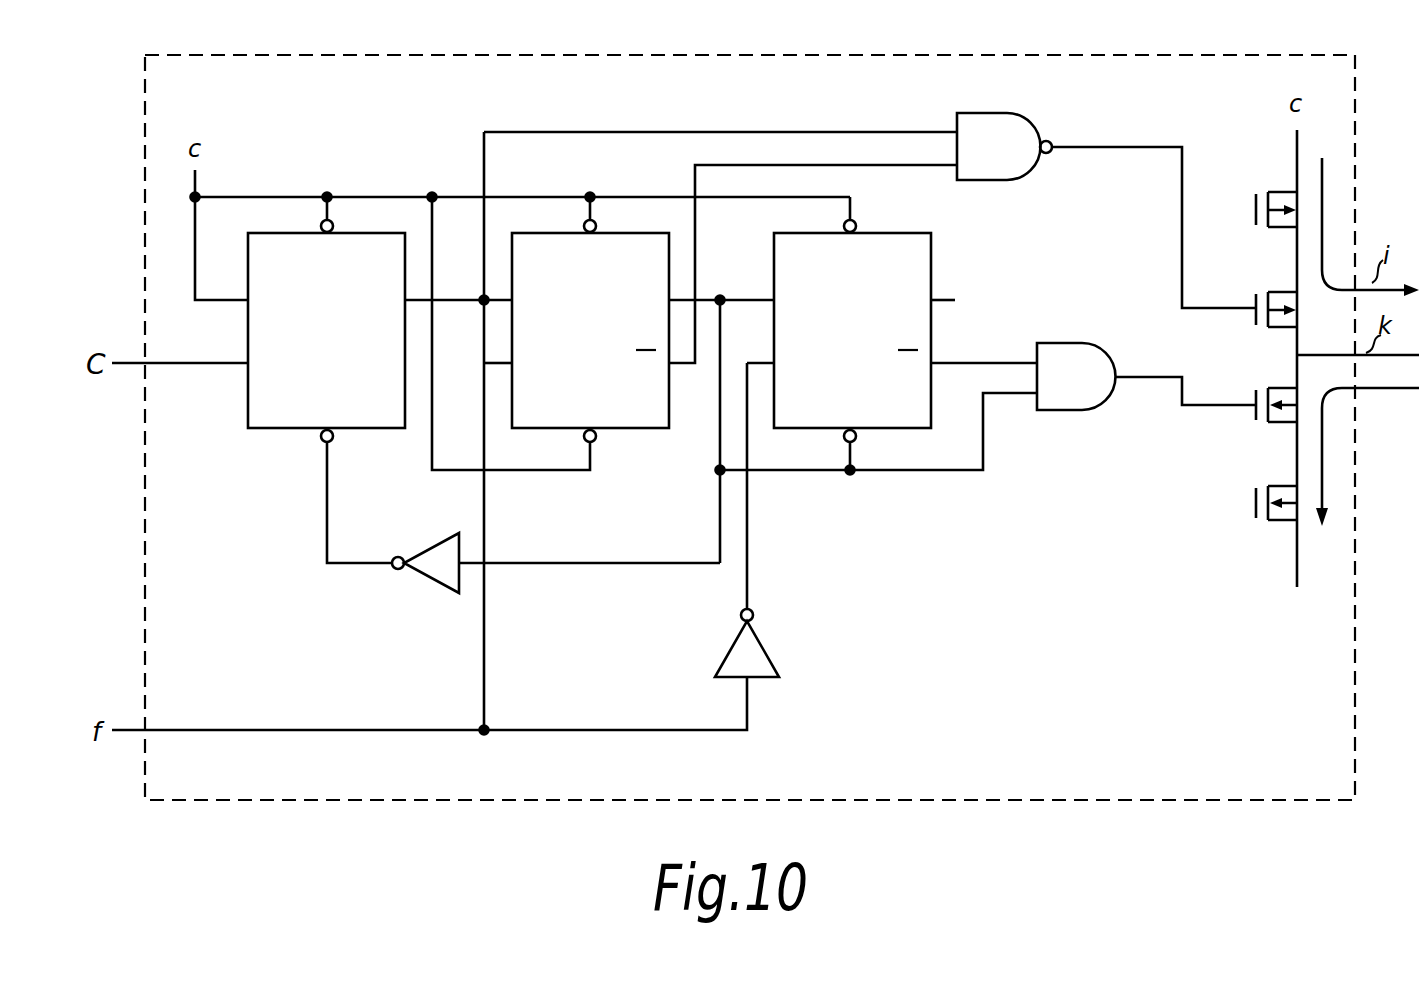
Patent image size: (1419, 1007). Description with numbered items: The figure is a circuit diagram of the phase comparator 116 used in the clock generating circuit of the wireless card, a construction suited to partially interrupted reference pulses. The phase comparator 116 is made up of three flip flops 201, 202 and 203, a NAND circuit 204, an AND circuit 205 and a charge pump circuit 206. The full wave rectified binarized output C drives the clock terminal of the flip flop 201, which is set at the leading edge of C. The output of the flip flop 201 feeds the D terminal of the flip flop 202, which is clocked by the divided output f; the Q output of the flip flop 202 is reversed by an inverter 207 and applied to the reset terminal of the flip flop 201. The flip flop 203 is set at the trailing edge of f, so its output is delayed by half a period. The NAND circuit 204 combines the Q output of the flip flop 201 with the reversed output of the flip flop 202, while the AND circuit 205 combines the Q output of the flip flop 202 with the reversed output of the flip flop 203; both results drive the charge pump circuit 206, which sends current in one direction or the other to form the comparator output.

The phase comparator 116 is at (677, 52).
The flip flop 201 is at (290, 418).
The flip flop 202 is at (633, 413).
The flip flop 203 is at (773, 273).
The NAND circuit 204 is at (990, 165).
The AND circuit 205 is at (1060, 395).
The charge pump circuit 206 is at (1285, 443).
The inverter 207 is at (422, 572).